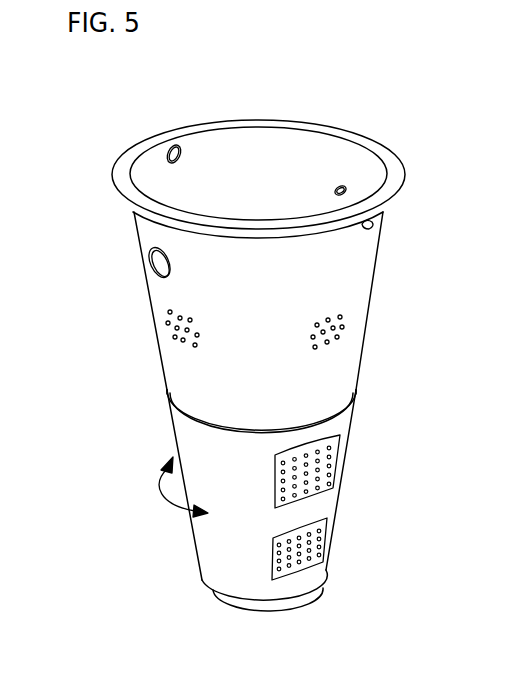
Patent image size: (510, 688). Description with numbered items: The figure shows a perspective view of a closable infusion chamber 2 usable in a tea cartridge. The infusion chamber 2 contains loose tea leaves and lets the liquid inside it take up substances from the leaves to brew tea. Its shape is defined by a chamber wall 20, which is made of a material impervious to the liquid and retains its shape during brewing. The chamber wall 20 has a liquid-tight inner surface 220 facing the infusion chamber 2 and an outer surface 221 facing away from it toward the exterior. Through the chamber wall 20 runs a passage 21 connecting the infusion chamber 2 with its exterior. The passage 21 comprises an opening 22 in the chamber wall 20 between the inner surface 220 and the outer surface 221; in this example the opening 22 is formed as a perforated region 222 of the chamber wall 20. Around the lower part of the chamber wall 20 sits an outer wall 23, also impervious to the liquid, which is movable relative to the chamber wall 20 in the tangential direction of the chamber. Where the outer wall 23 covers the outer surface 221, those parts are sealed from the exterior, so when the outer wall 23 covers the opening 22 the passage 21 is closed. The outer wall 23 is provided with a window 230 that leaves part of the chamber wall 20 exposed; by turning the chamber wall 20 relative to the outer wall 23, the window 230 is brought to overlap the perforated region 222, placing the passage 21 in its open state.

The infusion chamber 2 is at (244, 166).
The chamber wall 20 is at (157, 293).
The inner surface 220 is at (323, 178).
The outer surface 221 is at (243, 310).
The passage 21 is at (356, 540).
The opening 22 is at (293, 492).
The perforated region 222 is at (340, 467).
The outer wall 23 is at (192, 447).
The window 230 is at (290, 580).